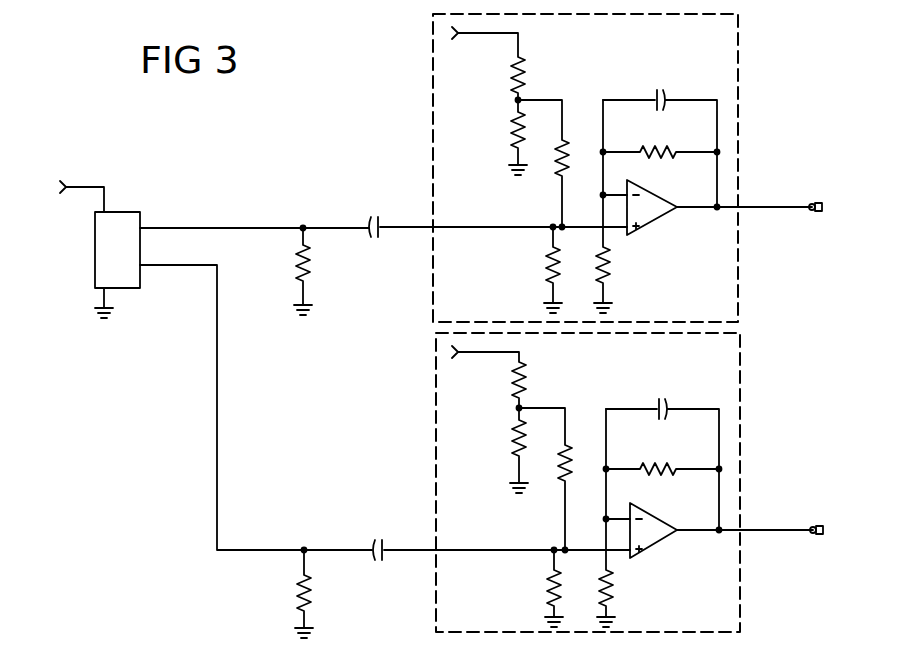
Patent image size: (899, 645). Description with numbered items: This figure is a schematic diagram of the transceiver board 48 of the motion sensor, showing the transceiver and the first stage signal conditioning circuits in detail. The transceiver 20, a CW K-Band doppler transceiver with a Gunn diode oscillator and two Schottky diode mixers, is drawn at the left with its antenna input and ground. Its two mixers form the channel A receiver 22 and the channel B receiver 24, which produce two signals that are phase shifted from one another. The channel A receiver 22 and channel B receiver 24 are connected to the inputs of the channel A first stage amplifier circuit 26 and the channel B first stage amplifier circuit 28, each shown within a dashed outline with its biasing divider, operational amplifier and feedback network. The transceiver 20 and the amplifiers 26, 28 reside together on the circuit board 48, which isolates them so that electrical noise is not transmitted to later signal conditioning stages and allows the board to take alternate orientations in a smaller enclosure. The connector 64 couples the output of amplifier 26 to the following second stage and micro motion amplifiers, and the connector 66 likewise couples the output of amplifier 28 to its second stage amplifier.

The transceiver 20 is at (105, 250).
The channel A receiver 22 is at (135, 255).
The channel B receiver 24 is at (135, 221).
The channel A first stage amplifier circuit 26 is at (435, 410).
The channel B first stage amplifier circuit 28 is at (432, 103).
The transceiver board 48 is at (146, 148).
The connector 64 is at (816, 526).
The connector 66 is at (812, 203).